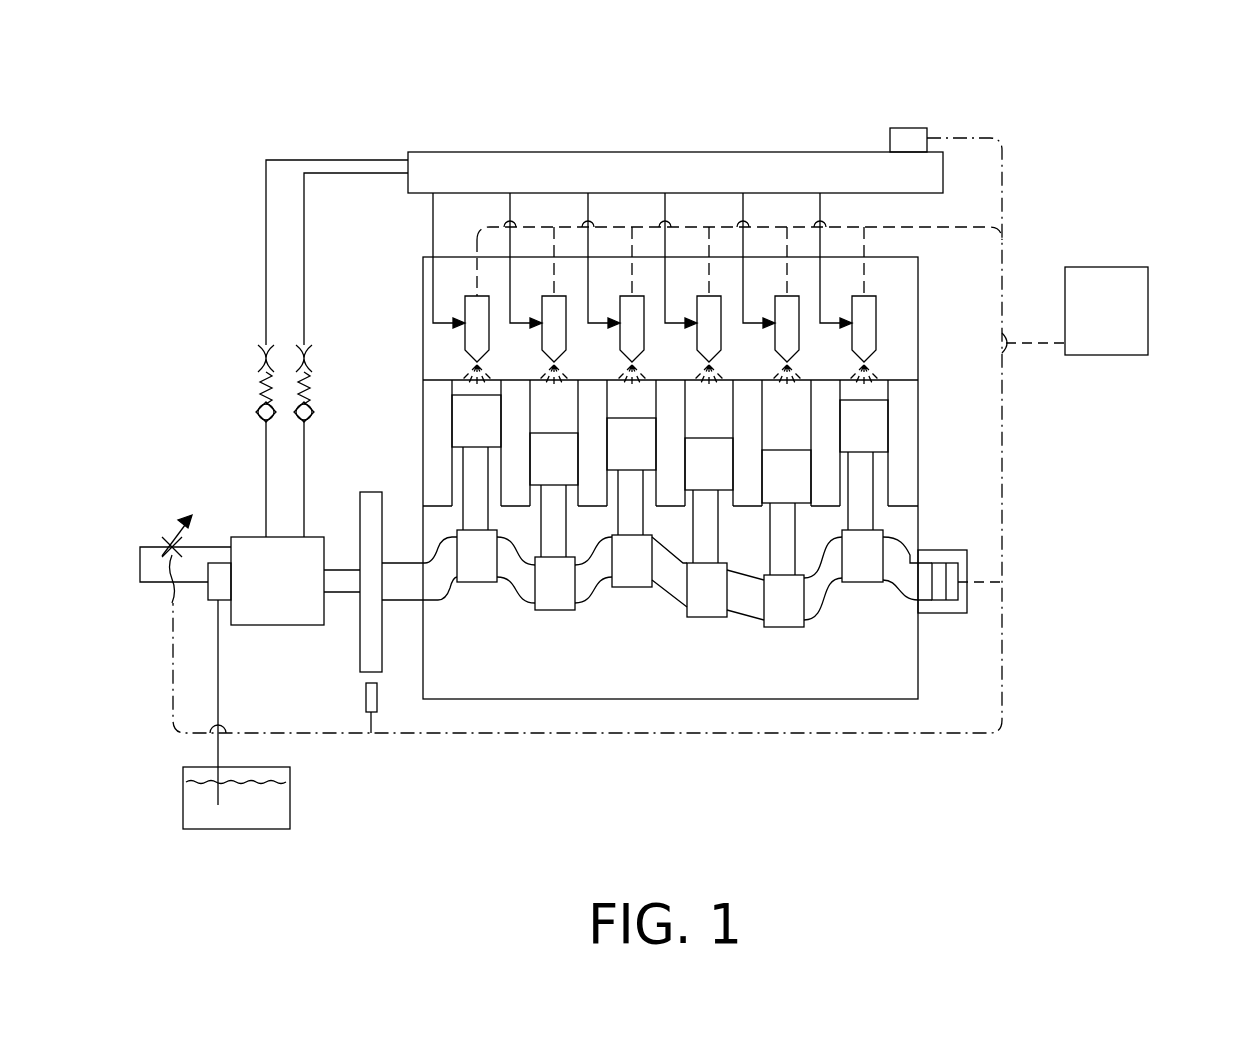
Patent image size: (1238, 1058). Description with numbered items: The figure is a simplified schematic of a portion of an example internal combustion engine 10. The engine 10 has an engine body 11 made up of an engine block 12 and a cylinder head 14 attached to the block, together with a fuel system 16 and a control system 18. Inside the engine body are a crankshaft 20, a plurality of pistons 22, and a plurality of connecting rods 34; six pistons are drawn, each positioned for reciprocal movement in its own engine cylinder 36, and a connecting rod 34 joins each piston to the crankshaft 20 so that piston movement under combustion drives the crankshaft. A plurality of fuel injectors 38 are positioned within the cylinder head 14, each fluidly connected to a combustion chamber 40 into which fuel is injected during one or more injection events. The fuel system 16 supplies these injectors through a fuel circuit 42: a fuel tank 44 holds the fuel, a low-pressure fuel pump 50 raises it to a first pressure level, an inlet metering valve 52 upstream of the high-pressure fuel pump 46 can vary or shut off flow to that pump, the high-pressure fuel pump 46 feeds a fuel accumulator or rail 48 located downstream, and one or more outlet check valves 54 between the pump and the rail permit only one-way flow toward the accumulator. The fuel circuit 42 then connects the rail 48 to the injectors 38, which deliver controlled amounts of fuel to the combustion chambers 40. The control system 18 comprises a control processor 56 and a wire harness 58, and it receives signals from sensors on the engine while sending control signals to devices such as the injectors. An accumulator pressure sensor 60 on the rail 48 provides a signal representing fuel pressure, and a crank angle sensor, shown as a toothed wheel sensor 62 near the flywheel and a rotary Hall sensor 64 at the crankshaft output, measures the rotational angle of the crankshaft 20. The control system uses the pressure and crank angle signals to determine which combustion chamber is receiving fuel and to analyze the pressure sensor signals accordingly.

The internal combustion engine 10 is at (188, 116).
The engine body 11 is at (1023, 714).
The engine block 12 is at (918, 490).
The cylinder head 14 is at (918, 330).
The fuel system 16 is at (181, 459).
The control system 18 is at (1154, 243).
The crankshaft 20 is at (743, 617).
The pistons 22 is at (476, 440).
The connecting rods 34 is at (867, 478).
The engine cylinders 36 is at (453, 427).
The fuel injectors 38 is at (630, 308).
The combustion chambers 40 is at (545, 400).
The fuel circuit 42 is at (256, 243).
The fuel tank 44 is at (183, 767).
The high-pressure fuel pump 46 is at (277, 581).
The fuel accumulator or rail 48 is at (465, 152).
The low-pressure fuel pump 50 is at (206, 600).
The inlet metering valve 52 is at (168, 543).
The outlet check valves 54 is at (258, 408).
The control processor 56 is at (1106, 311).
The wire harness 58 is at (1040, 340).
The accumulator pressure sensor 60 is at (890, 128).
The toothed wheel sensor 62 is at (363, 700).
The rotary Hall sensor 64 is at (970, 600).